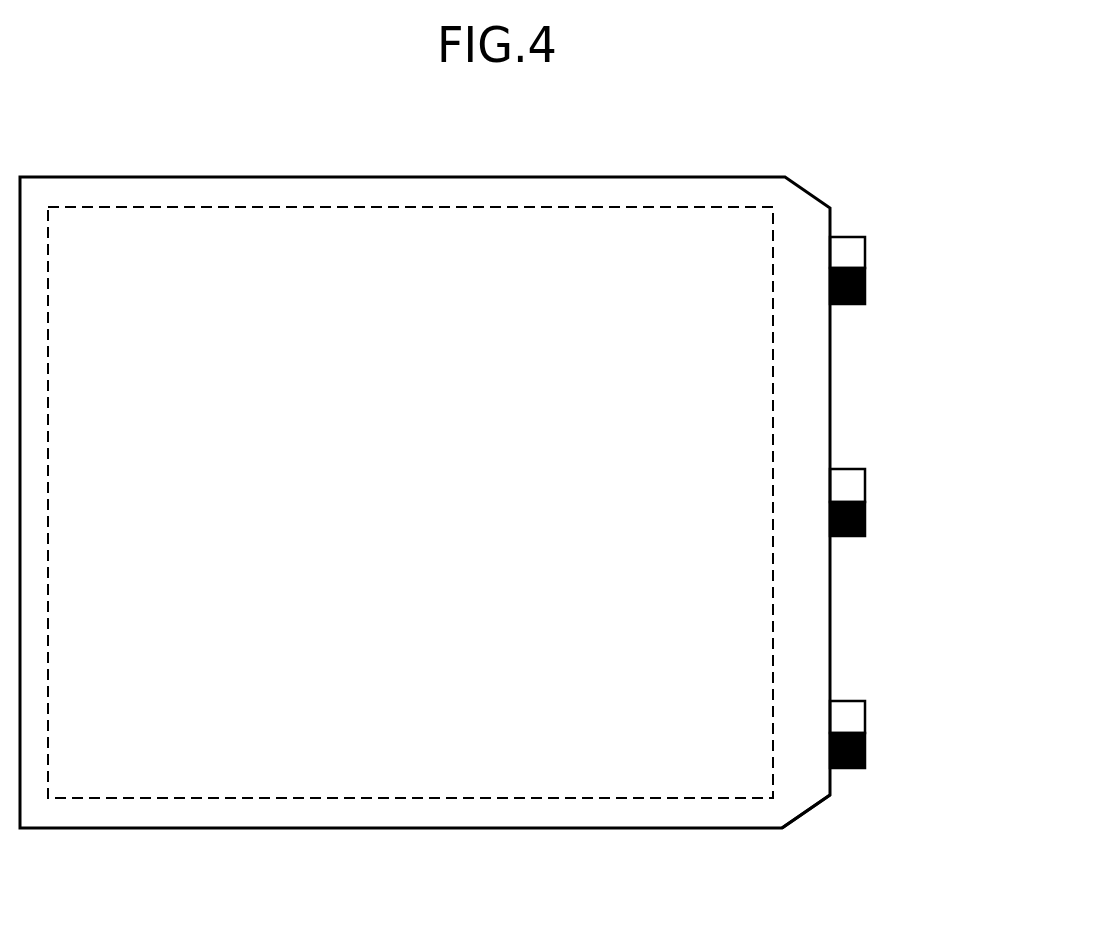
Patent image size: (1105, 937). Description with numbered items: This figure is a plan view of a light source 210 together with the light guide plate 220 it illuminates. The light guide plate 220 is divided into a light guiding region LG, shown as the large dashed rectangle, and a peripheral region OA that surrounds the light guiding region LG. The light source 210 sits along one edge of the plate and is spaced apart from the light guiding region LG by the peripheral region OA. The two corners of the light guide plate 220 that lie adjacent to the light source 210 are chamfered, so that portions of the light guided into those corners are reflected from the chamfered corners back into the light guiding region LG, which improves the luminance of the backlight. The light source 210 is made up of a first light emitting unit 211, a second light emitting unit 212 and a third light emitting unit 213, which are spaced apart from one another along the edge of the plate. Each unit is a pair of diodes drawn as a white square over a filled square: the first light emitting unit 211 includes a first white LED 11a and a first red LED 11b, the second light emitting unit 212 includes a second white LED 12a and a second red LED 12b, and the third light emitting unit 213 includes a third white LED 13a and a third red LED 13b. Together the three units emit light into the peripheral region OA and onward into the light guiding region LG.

The light guide plate 220 is at (812, 191).
The light guiding region LG is at (466, 798).
The peripheral region OA is at (795, 757).
The light source 210 is at (955, 491).
The first light emitting unit 211 is at (925, 259).
The second light emitting unit 212 is at (925, 491).
The third light emitting unit 213 is at (925, 723).
The first white LED 11a is at (864, 249).
The first red LED 11b is at (864, 287).
The second white LED 12a is at (864, 481).
The second red LED 12b is at (864, 520).
The third white LED 13a is at (864, 711).
The third red LED 13b is at (864, 752).